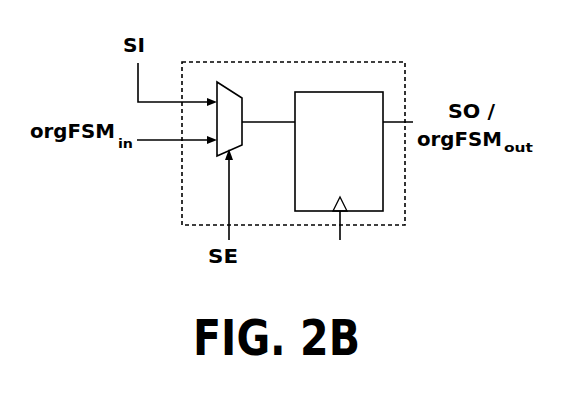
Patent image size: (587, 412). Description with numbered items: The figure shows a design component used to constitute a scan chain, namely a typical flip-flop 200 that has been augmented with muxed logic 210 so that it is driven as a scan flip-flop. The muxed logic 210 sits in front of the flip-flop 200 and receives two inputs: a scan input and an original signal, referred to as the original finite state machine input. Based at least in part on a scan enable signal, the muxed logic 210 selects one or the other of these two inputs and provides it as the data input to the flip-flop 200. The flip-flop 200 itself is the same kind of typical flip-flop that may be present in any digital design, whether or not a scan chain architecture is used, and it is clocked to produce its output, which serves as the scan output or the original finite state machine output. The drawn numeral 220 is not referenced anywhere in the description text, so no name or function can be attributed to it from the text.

The typical flip-flop 200 is at (347, 143).
The muxed logic 210 is at (232, 82).
The D flip-flop 220 is at (390, 83).